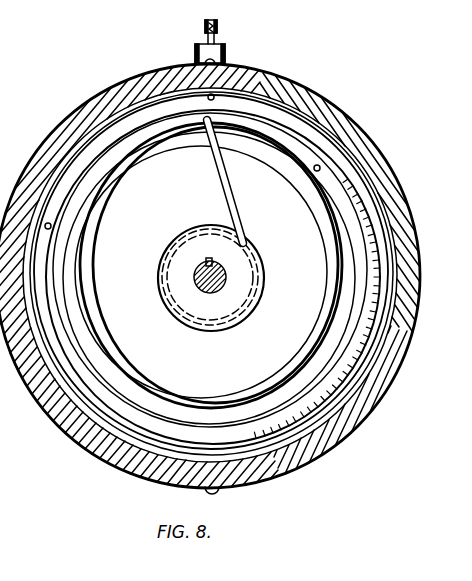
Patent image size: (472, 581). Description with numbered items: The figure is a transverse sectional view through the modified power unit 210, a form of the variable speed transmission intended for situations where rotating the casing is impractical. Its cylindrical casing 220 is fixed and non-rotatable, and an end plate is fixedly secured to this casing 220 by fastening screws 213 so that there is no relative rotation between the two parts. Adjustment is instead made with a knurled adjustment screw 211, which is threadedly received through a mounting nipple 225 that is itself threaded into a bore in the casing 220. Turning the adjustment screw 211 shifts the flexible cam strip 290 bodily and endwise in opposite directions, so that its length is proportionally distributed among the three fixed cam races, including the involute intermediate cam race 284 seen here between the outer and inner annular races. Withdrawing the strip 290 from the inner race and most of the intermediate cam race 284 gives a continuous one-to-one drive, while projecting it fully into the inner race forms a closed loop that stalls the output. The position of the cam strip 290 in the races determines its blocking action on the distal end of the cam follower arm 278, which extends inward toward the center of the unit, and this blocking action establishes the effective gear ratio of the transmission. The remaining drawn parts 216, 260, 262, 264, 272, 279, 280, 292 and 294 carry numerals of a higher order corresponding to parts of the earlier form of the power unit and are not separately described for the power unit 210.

The power unit 210 is at (28, 177).
The knurled adjustment screw 211 is at (217, 24).
The fastening screws 213 is at (210, 276).
The shaft 216 is at (197, 282).
The casing 220 is at (340, 441).
The mounting nipple 225 is at (226, 49).
The hub ring 260 is at (240, 317).
The key 262 is at (207, 258).
The inner dashed ring 264 is at (195, 318).
The dashed ring 272 is at (219, 199).
The cam follower arm 278 is at (238, 216).
The eccentric ring 279 is at (320, 168).
The inner ring 280 is at (51, 227).
The involute intermediate cam race 284 is at (165, 118).
The flexible cam strip 290 is at (310, 120).
The outer ring 292 is at (262, 68).
The pin 294 is at (208, 94).